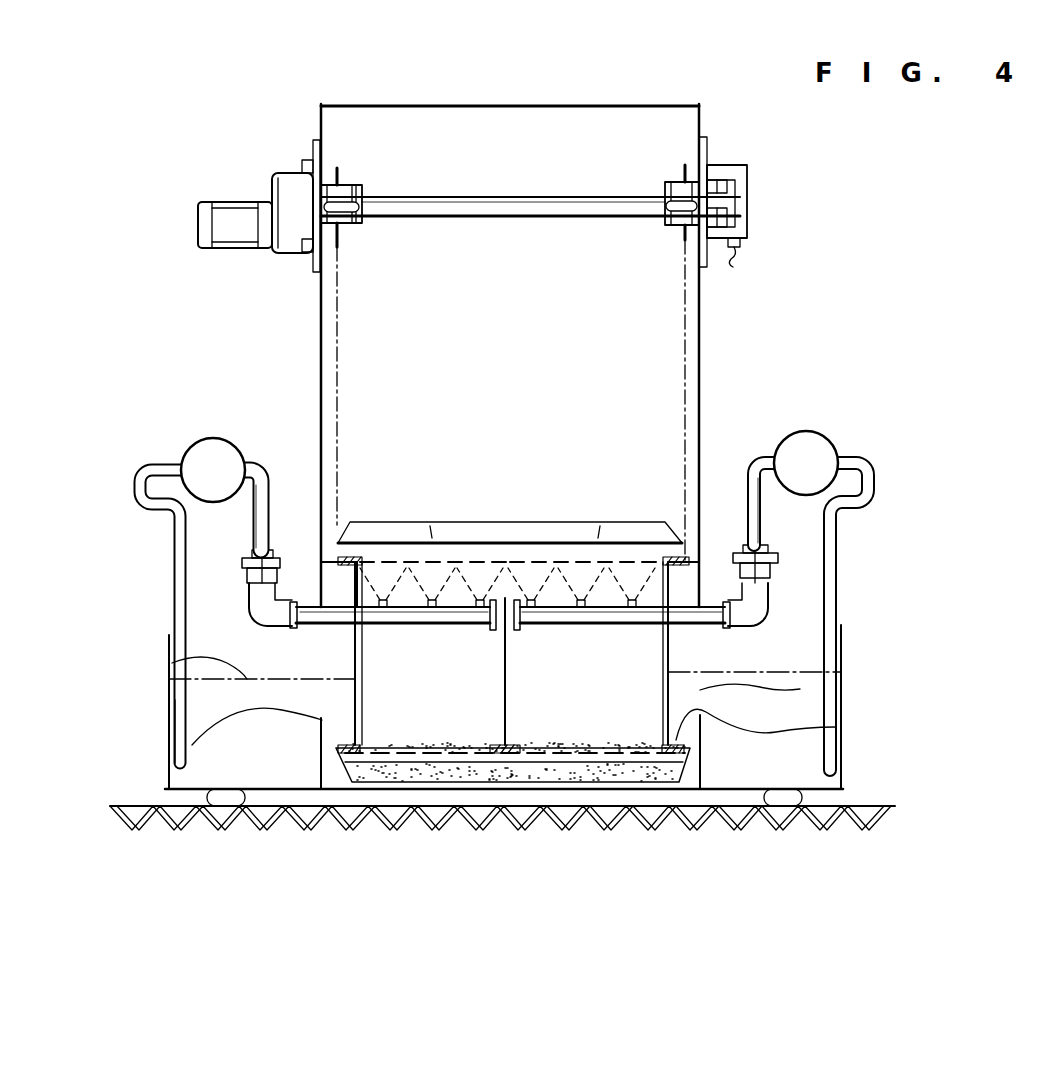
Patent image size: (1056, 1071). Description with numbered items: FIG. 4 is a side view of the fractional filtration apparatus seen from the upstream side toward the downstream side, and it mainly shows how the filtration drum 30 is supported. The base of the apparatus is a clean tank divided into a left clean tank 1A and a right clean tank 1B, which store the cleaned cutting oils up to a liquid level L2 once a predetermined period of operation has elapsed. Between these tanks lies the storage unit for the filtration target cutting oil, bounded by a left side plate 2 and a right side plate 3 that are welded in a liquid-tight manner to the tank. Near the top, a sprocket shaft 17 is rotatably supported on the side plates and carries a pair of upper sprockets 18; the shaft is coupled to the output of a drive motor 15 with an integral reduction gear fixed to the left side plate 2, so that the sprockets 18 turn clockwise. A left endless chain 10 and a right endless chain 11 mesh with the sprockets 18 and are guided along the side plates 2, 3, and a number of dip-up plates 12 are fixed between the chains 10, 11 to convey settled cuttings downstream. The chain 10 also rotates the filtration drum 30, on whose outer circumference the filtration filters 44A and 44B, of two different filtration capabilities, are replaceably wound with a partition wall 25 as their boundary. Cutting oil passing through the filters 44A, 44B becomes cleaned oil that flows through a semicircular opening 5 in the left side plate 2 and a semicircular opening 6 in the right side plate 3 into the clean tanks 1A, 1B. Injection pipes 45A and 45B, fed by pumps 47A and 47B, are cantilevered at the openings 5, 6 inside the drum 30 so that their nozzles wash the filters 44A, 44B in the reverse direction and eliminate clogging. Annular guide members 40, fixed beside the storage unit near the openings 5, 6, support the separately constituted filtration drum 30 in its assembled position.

The left clean tank 1A is at (230, 720).
The right clean tank 1B is at (785, 729).
The left side plate 2 is at (319, 358).
The right side plate 3 is at (700, 345).
The semicircular opening 5 is at (314, 657).
The semicircular opening 6 is at (701, 694).
The left endless chain 10 is at (337, 324).
The right endless chain 11 is at (685, 303).
The dip-up plate 12 is at (493, 521).
The drive motor 15 is at (238, 212).
The sprocket shaft 17 is at (523, 197).
The upper sprocket 18 is at (339, 168).
The partition wall 25 is at (506, 686).
The filtration drum 30 is at (692, 543).
The annular guide member 40 is at (182, 773).
The filtration filter 44A is at (434, 555).
The filtration filter 44B is at (590, 557).
The injection pipe 45A is at (583, 614).
The injection pipe 45B is at (428, 614).
The pump 47A is at (204, 452).
The pump 47B is at (806, 442).
The liquid level L2 is at (248, 678).